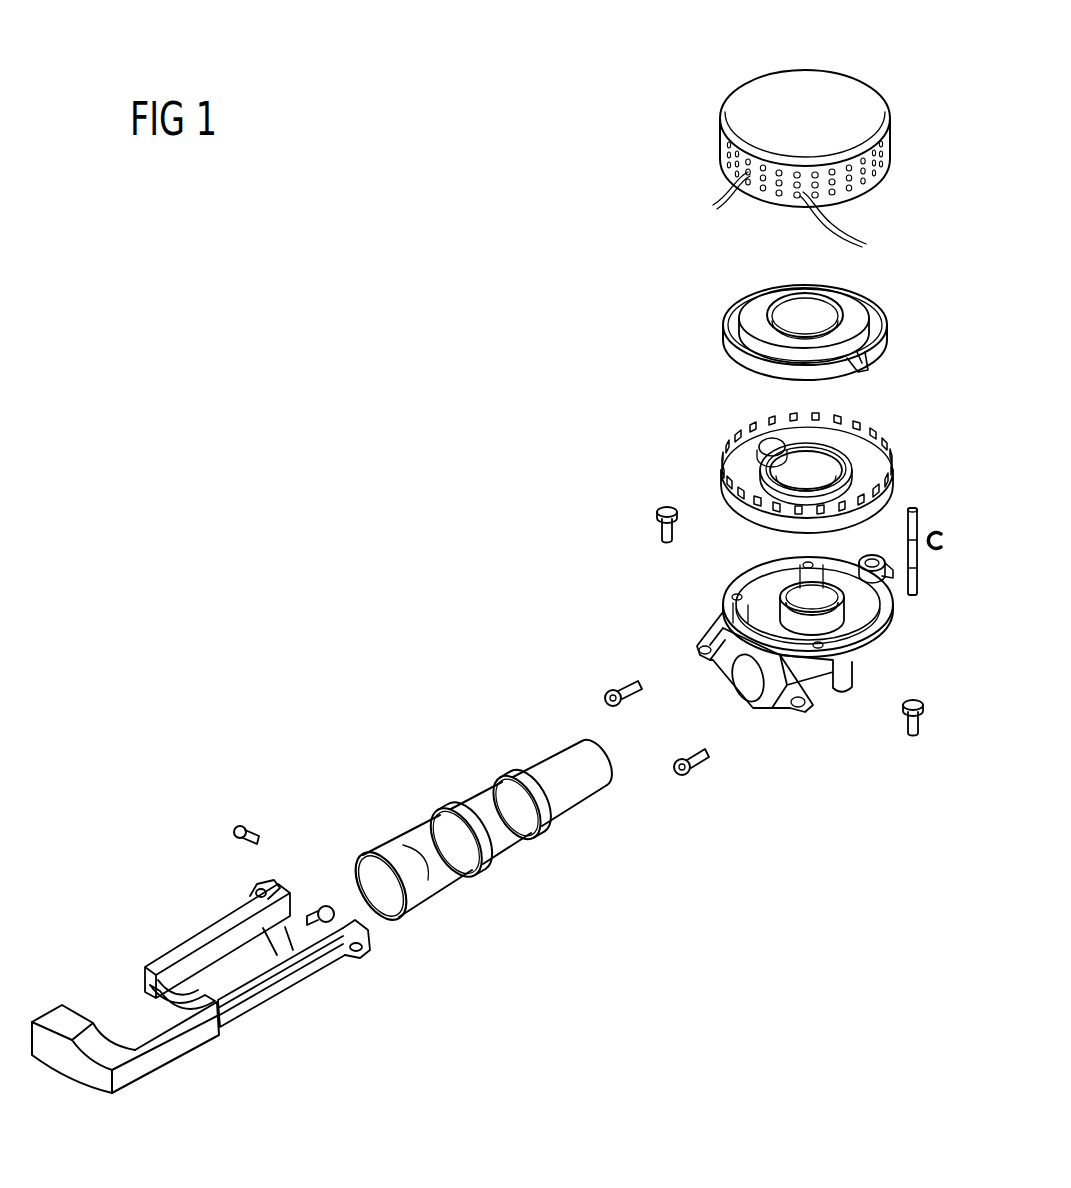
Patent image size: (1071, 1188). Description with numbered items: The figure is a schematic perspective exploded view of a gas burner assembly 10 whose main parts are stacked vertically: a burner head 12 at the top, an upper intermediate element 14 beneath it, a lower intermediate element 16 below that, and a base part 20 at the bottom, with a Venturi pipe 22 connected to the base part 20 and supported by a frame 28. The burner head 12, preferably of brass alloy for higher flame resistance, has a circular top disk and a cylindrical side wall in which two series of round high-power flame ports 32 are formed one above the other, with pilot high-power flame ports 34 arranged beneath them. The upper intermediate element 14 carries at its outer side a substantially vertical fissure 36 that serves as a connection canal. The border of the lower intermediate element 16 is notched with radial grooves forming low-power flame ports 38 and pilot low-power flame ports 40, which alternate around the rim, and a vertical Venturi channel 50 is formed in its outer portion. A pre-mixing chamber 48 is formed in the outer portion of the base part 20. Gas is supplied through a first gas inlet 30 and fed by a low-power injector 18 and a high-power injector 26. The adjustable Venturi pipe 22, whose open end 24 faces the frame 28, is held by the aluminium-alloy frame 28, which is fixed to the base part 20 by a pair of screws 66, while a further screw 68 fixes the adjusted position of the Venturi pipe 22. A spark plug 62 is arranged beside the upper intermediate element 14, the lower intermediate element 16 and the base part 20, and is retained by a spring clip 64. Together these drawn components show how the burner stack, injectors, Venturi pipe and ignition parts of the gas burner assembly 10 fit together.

The gas burner assembly 10 is at (292, 370).
The burner head 12 is at (770, 105).
The upper intermediate element 14 is at (730, 317).
The lower intermediate element 16 is at (735, 449).
The low-power injector 18 is at (656, 523).
The base part 20 is at (862, 640).
The Venturi pipe 22 is at (497, 840).
The tube inlet end 24 is at (383, 903).
The high-power injector 26 is at (318, 905).
The frame 28 is at (224, 936).
The first gas inlet 30 is at (48, 1052).
The high-power flame ports 32 is at (716, 197).
The pilot high-power flame ports 34 is at (847, 229).
The fissure 36 is at (870, 370).
The low-power flame ports 38 is at (742, 501).
The pilot low-power flame ports 40 is at (760, 524).
The pre-mixing chamber 48 is at (727, 623).
The vertical Venturi channel 50 is at (765, 441).
The spark plug 62 is at (912, 505).
The retaining clip 64 is at (938, 557).
The screws 66 is at (637, 697).
The screw 68 is at (252, 828).